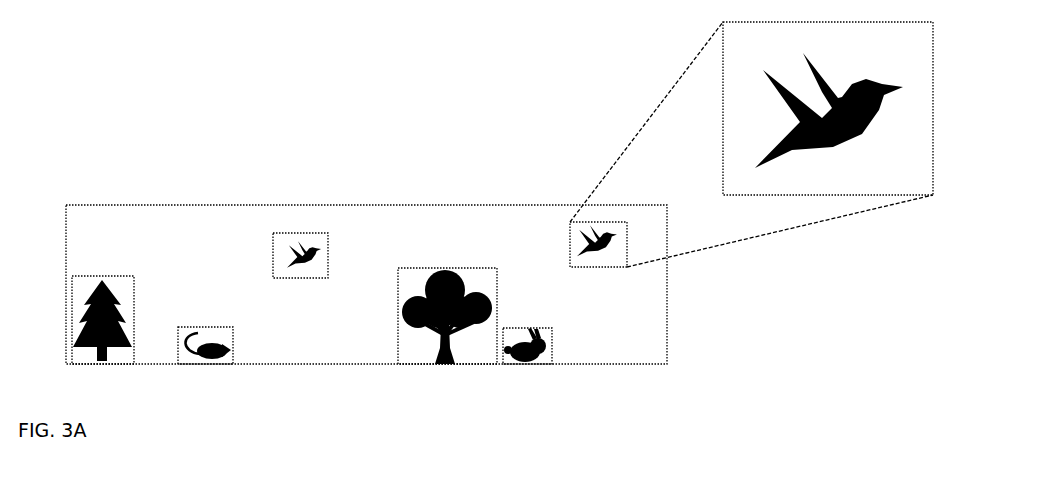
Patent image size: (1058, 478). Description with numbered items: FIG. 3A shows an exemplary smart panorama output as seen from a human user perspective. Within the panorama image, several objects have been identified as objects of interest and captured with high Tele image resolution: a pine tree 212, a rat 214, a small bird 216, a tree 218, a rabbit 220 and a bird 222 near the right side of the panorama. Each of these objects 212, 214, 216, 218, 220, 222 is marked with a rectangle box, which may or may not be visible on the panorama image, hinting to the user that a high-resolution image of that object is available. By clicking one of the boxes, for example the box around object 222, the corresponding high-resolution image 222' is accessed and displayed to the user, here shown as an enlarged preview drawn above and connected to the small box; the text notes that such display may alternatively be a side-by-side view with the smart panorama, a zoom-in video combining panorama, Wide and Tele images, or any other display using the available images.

The object of interest 212 is at (112, 262).
The object of interest 214 is at (207, 325).
The object of interest 216 is at (302, 280).
The object of interest 218 is at (447, 265).
The object of interest 220 is at (527, 325).
The object of interest 222 is at (598, 261).
The high-resolution image of object of interest 222' is at (828, 126).